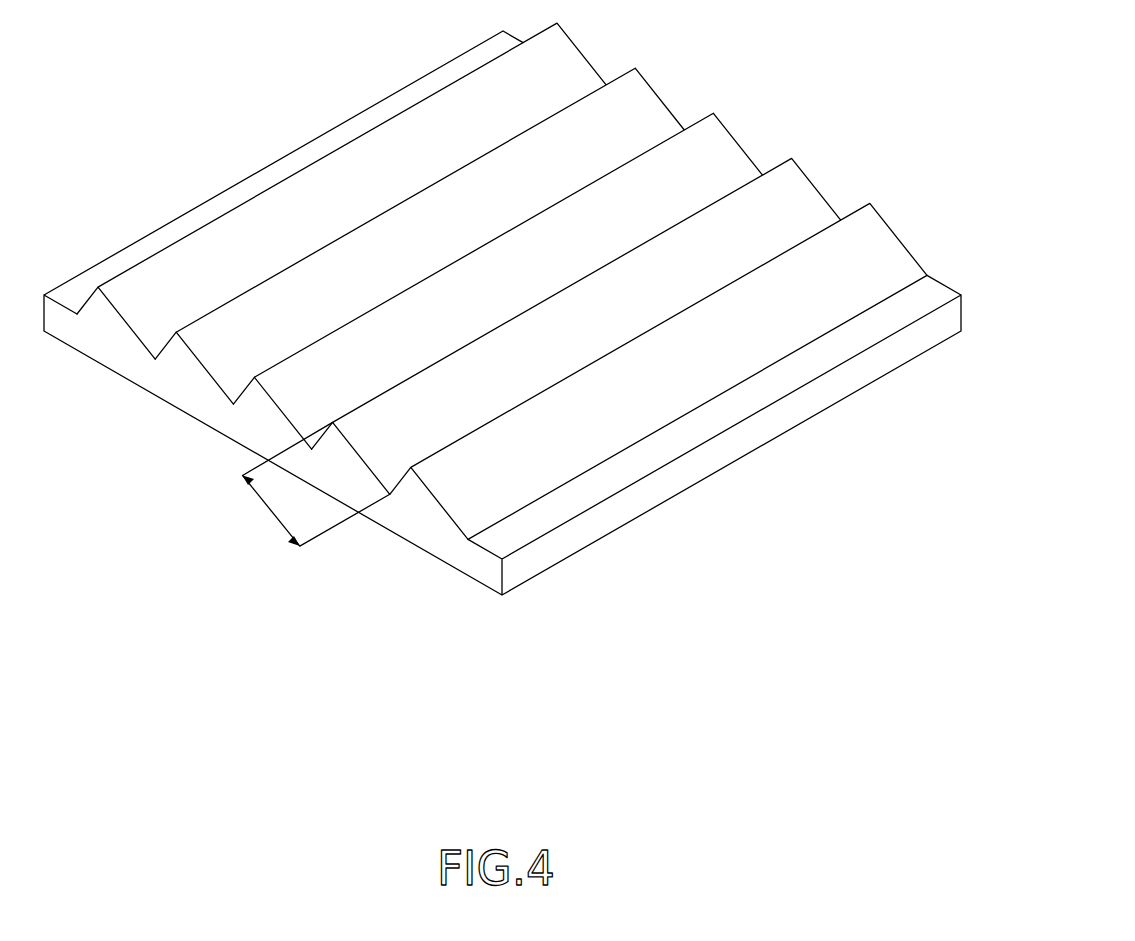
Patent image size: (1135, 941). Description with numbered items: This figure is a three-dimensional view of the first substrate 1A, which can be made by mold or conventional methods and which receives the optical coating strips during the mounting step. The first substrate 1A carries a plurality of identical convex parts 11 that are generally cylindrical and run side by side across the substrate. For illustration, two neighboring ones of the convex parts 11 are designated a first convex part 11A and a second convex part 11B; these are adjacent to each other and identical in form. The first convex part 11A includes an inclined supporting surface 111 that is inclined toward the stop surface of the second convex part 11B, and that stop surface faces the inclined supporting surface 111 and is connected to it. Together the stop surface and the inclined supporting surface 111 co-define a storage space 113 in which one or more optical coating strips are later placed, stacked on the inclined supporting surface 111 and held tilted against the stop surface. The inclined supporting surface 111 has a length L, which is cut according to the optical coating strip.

The first substrate 1A is at (261, 140).
The convex parts 11 is at (98, 303).
The first convex part 11A is at (177, 347).
The second convex part 11B is at (254, 393).
The inclined supporting surface 111 is at (714, 159).
The storage space 113 is at (663, 200).
The length L is at (270, 508).